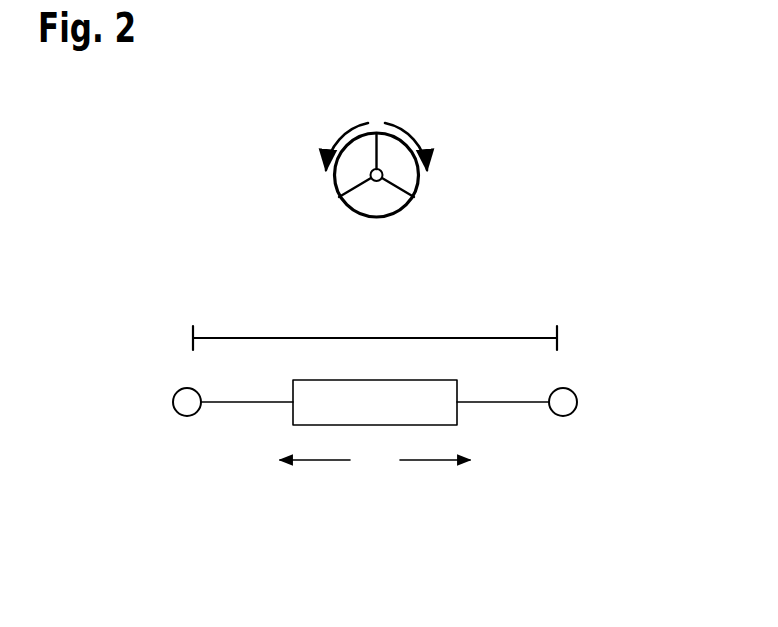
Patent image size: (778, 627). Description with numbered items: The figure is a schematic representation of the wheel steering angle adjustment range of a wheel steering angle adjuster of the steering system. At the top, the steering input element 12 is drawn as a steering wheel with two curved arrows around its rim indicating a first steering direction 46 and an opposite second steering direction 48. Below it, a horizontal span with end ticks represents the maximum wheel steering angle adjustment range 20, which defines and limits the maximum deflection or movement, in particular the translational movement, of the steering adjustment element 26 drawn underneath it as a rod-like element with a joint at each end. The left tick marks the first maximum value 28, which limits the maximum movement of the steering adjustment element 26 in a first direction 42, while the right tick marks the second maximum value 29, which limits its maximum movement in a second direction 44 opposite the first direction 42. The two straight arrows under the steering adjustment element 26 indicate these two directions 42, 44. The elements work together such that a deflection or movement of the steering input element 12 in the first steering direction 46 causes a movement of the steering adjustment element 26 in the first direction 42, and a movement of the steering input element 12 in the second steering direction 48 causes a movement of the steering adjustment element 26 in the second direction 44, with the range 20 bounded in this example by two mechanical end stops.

The steering input element 12 is at (423, 203).
The first steering direction 46 is at (334, 144).
The second steering direction 48 is at (418, 143).
The maximum wheel steering angle adjustment range 20 is at (493, 282).
The first maximum value 28 is at (195, 325).
The second maximum value 29 is at (558, 325).
The steering adjustment element 26 is at (550, 380).
The first direction 42 is at (323, 462).
The second direction 44 is at (428, 462).